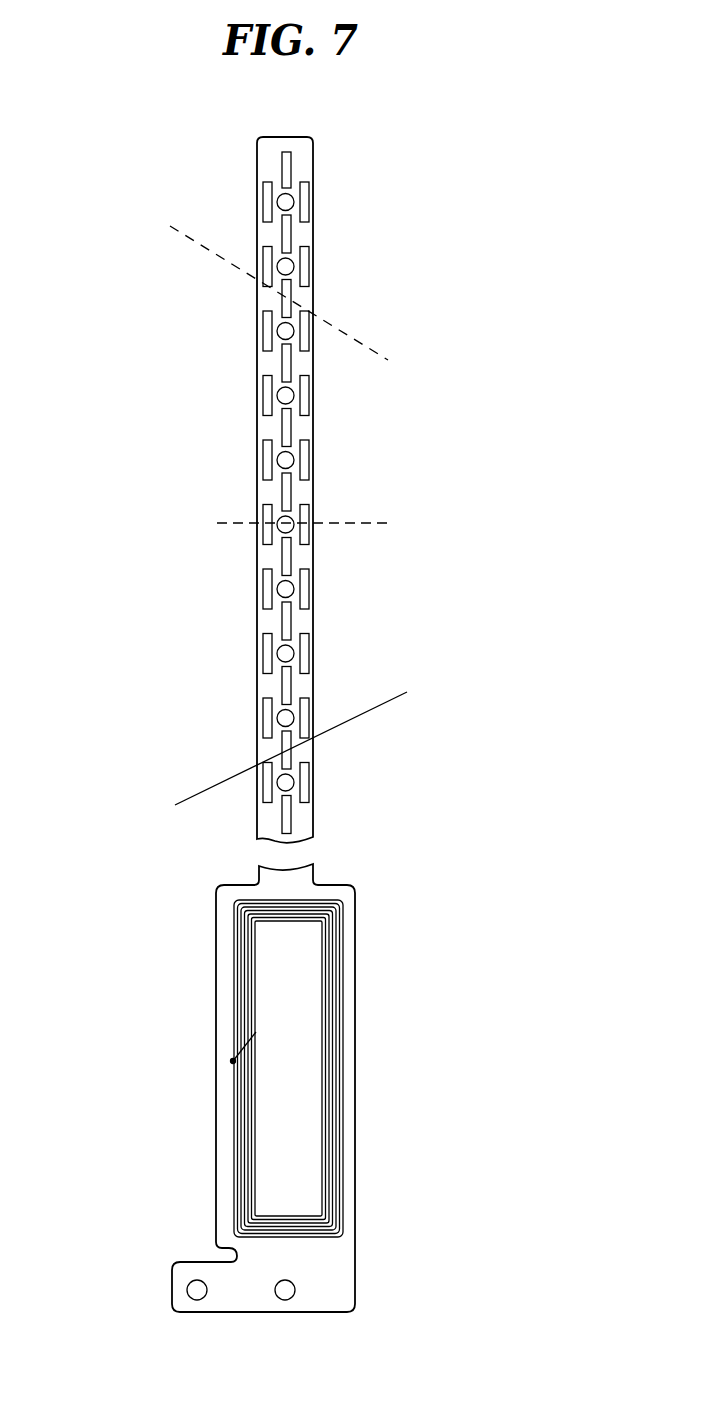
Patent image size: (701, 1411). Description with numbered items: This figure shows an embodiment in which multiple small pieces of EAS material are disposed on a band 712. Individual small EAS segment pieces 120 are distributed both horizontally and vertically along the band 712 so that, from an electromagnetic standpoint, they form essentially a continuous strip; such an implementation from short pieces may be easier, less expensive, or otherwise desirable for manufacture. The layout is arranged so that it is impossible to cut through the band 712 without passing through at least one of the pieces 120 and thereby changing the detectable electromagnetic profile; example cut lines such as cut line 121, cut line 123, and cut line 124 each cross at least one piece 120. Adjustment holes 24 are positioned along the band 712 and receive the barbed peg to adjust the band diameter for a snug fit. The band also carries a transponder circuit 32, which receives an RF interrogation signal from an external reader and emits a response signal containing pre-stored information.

The band 712 is at (90, 538).
The cut line 123 is at (260, 283).
The adjustment holes 24 is at (278, 461).
The EAS segment pieces 120 is at (268, 592).
The cut line 121 is at (327, 523).
The cut line 124 is at (270, 757).
The transponder circuit 32 is at (193, 914).